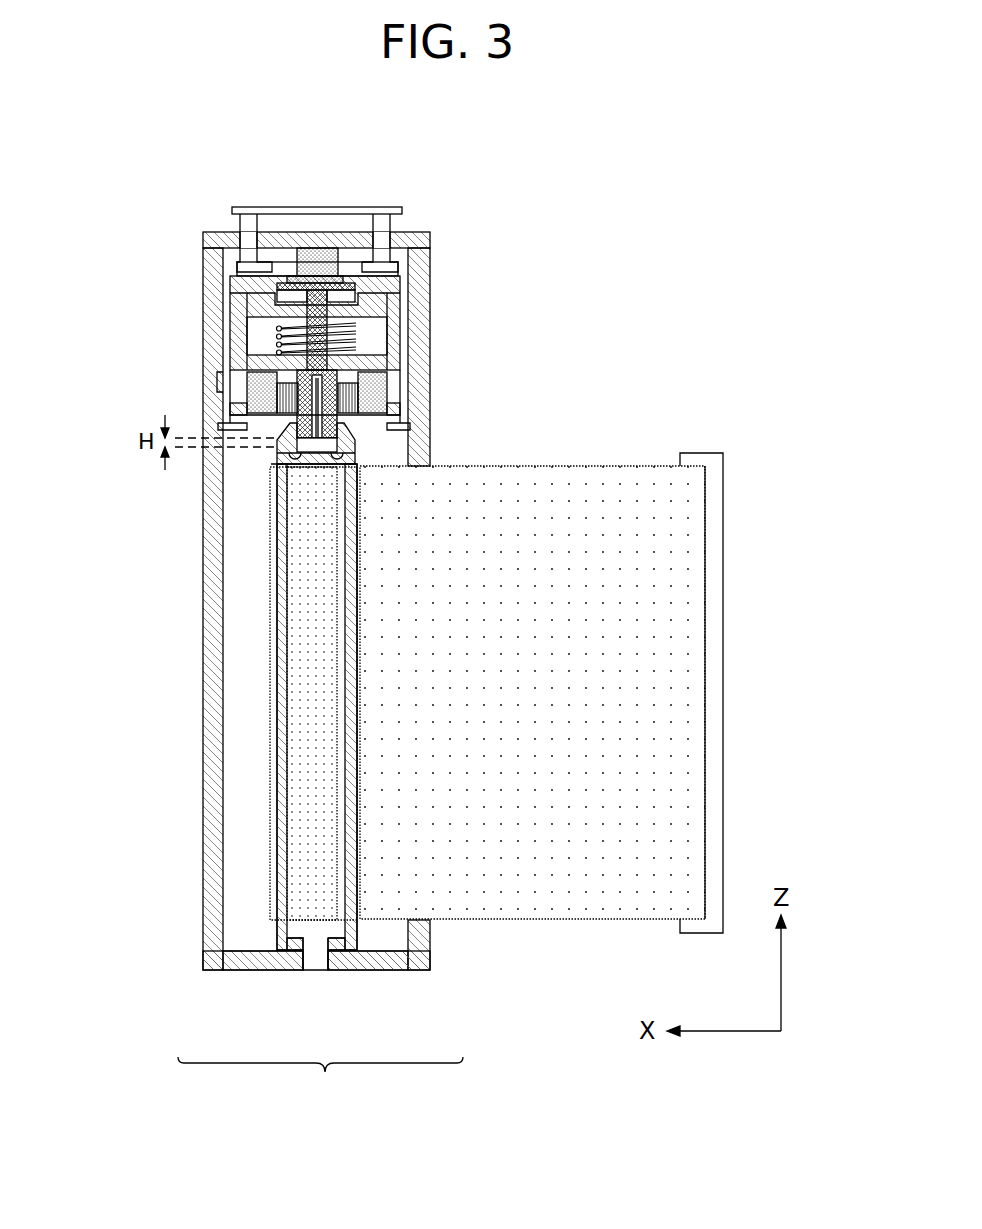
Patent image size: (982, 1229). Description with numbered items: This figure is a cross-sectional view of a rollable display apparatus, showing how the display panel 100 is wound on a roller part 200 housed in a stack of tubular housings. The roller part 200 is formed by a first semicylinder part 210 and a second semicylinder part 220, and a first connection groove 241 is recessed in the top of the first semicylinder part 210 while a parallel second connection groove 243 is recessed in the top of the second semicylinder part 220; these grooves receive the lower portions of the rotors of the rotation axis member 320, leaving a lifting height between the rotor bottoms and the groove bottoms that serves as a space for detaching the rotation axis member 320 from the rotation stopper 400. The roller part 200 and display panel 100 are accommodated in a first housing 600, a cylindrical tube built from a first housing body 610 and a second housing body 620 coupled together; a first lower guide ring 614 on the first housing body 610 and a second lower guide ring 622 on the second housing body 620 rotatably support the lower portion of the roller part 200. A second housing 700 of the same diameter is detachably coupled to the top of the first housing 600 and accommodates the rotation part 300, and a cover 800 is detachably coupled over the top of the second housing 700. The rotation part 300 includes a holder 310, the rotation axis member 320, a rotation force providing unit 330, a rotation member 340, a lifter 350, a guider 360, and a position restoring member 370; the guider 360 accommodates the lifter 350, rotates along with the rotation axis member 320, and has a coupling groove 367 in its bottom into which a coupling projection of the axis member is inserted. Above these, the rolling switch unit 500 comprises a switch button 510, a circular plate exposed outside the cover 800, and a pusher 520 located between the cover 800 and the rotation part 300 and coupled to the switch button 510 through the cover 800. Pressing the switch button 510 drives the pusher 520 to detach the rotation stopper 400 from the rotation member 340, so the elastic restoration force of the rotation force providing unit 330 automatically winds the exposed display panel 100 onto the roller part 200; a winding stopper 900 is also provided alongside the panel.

The display panel 100 is at (579, 480).
The roller part 200 is at (209, 717).
The first semicylinder part 210 is at (282, 805).
The second semicylinder part 220 is at (350, 873).
The first connection groove 241 is at (300, 455).
The second connection groove 243 is at (353, 448).
The rotation part 300 is at (409, 343).
The holder 310 is at (375, 403).
The rotation axis member 320 is at (338, 372).
The rotation force providing unit 330 is at (363, 395).
The rotation member 340 is at (360, 292).
The lifter 350 is at (350, 282).
The guider 360 is at (393, 316).
The coupling groove 367 is at (255, 362).
The position restoring member 370 is at (360, 343).
The rotation stopper 400 is at (272, 273).
The rolling switch unit 500 is at (405, 209).
The switch button 510 is at (402, 210).
The pusher 520 is at (386, 268).
The first housing 600 is at (320, 1081).
The first housing body 610 is at (430, 972).
The first lower guide ring 614 is at (390, 966).
The second housing body 620 is at (205, 972).
The second lower guide ring 622 is at (243, 966).
The second housing 700 is at (213, 303).
The cover 800 is at (215, 240).
The winding stopper 900 is at (703, 460).